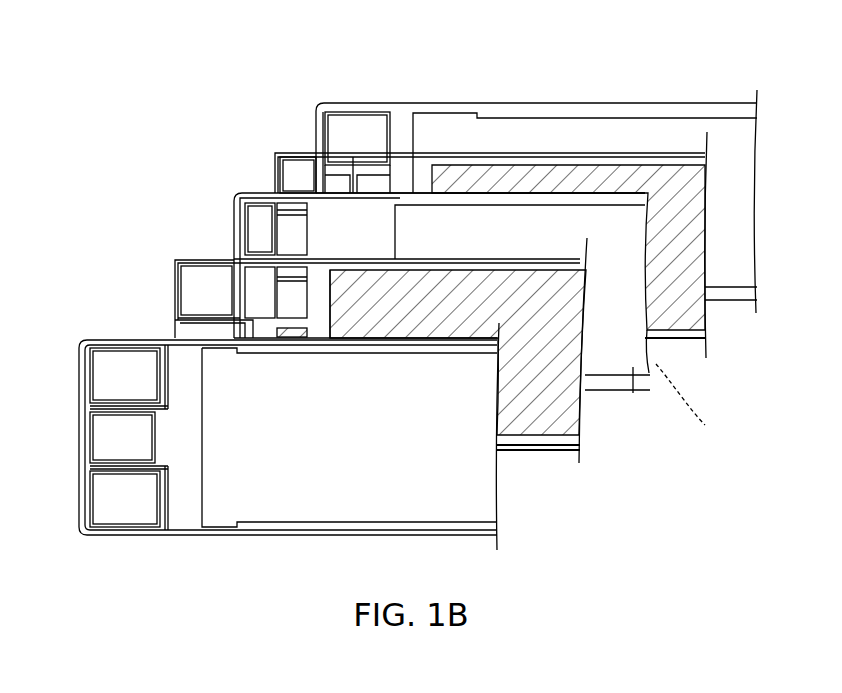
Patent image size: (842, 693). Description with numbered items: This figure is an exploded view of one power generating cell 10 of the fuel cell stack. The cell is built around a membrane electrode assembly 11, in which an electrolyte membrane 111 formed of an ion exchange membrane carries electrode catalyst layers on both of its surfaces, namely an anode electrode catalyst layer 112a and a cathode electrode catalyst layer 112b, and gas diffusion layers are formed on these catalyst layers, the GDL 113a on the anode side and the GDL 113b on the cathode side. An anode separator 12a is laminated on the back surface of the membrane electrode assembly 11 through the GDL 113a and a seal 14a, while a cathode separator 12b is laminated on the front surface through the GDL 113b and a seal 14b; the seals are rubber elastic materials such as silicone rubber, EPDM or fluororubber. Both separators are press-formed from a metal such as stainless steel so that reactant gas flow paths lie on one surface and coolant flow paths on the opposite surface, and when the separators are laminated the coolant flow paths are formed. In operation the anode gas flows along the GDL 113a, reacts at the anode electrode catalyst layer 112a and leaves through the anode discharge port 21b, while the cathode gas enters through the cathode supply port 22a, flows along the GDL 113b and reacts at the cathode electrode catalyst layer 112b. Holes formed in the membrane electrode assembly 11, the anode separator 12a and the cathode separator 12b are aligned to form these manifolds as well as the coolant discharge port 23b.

The power generating cell 10 is at (704, 84).
The membrane electrode assembly 11 is at (609, 443).
The electrolyte membrane 111 is at (611, 386).
The anode electrode catalyst layer 112a is at (700, 402).
The cathode electrode catalyst layer 112b is at (633, 388).
The gas diffusion layer 113a is at (690, 303).
The gas diffusion layer 113b is at (571, 405).
The anode separator 12a is at (401, 117).
The cathode separator 12b is at (188, 522).
The seal 14a is at (276, 153).
The seal 14b is at (175, 262).
The anode discharge port 21b is at (106, 522).
The cathode supply port 22a is at (348, 117).
The coolant discharge port 23b is at (322, 182).